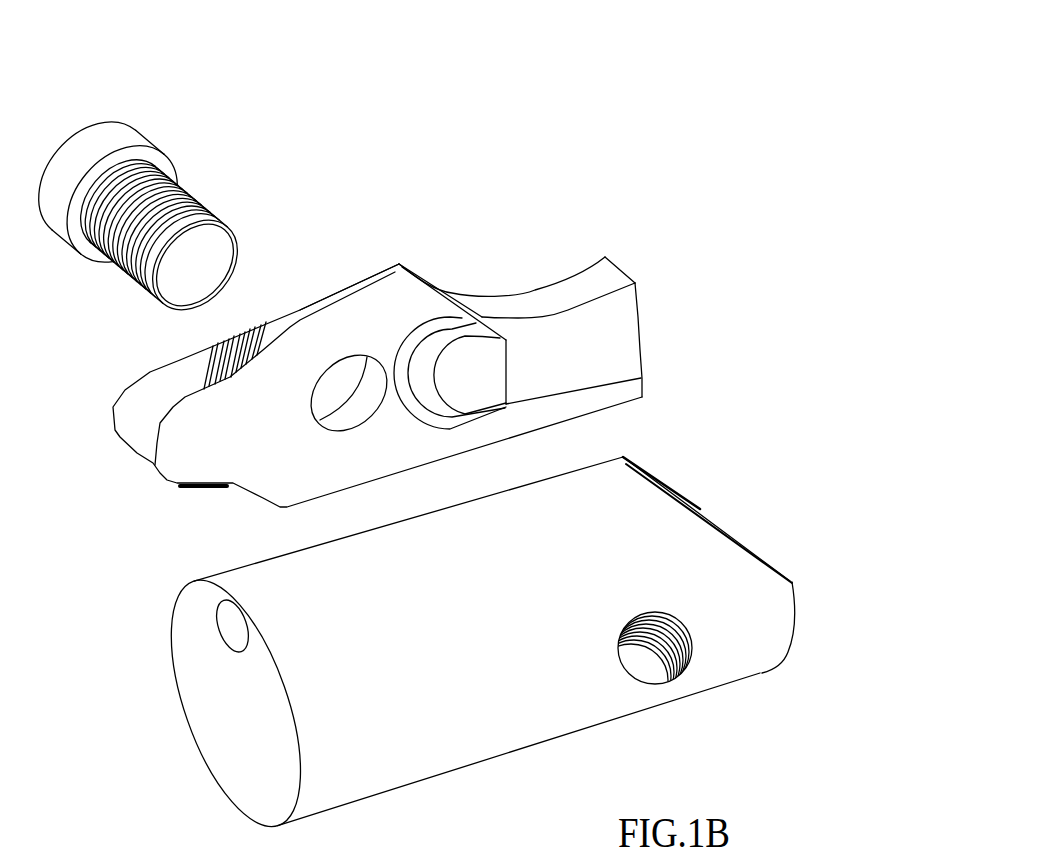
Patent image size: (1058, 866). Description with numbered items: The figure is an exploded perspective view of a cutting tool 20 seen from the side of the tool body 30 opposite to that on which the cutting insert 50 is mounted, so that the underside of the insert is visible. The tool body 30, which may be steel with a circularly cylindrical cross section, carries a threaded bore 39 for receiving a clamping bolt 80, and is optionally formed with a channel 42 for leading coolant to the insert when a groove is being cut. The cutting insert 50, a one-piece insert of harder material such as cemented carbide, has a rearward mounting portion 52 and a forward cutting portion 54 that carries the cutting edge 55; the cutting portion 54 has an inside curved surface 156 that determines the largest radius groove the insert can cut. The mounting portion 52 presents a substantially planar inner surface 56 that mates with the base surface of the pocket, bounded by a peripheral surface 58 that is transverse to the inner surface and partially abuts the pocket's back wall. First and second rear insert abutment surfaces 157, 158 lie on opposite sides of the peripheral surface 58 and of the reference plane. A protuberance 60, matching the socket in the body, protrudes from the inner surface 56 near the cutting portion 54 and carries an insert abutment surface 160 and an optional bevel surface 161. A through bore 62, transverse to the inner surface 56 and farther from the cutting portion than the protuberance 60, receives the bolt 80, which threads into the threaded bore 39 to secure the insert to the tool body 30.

The cutting tool 20 is at (176, 74).
The clamping bolt 80 is at (200, 170).
The cutting insert 50 is at (372, 224).
The mounting portion 52 is at (342, 277).
The cutting portion 54 is at (497, 283).
The cutting edge 55 is at (630, 266).
The inner surface 56 is at (240, 448).
The peripheral surface 58 is at (282, 313).
The protuberance 60 is at (400, 414).
The through bore 62 is at (329, 396).
The inside curved surface 156 is at (610, 350).
The first rear insert abutment surface 157 is at (217, 347).
The second rear insert abutment surface 158 is at (205, 492).
The insert abutment surface 160 is at (468, 420).
The bevel surface 161 is at (418, 414).
The tool body 30 is at (700, 480).
The threaded bore 39 is at (680, 650).
The channel 42 is at (230, 630).